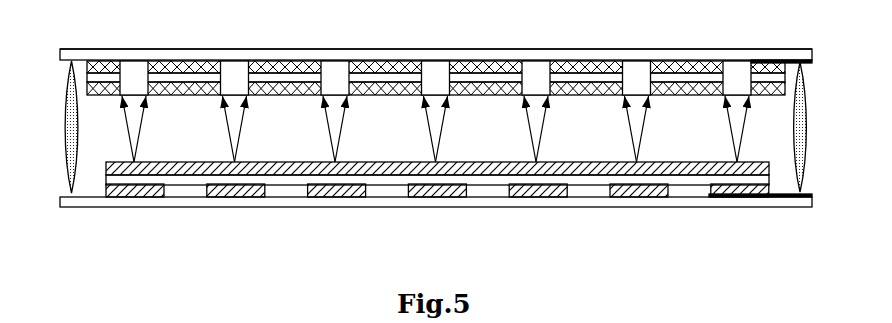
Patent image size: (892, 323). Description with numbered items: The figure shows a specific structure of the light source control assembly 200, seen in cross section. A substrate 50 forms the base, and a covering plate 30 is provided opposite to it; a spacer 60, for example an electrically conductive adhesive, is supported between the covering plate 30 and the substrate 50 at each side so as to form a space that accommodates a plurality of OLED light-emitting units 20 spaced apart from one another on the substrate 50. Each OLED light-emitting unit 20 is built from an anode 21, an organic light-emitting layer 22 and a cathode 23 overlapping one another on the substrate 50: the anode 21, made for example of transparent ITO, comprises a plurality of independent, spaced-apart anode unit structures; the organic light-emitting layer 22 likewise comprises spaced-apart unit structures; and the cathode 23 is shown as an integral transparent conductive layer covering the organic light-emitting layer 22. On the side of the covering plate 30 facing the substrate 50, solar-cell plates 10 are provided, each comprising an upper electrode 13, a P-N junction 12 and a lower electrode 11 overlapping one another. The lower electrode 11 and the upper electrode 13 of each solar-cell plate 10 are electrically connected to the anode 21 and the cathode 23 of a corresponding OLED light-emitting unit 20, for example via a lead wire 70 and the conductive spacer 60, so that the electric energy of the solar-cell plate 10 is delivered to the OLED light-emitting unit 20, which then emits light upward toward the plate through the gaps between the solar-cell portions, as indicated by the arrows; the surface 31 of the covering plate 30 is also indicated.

The light source control assembly 200 is at (93, 30).
The solar-cell plate 10 is at (466, 62).
The lower electrode 11 is at (785, 92).
The P-N junction 12 is at (785, 78).
The upper electrode 13 is at (785, 65).
The OLED light-emitting unit 20 is at (393, 176).
The anode 21 is at (106, 190).
The organic light-emitting layer 22 is at (106, 178).
The cathode 23 is at (106, 165).
The covering plate 30 is at (60, 51).
The light-exiting surface 31 is at (437, 43).
The substrate 50 is at (60, 202).
The spacer 60 is at (65, 98).
The lead wire 70 is at (787, 60).